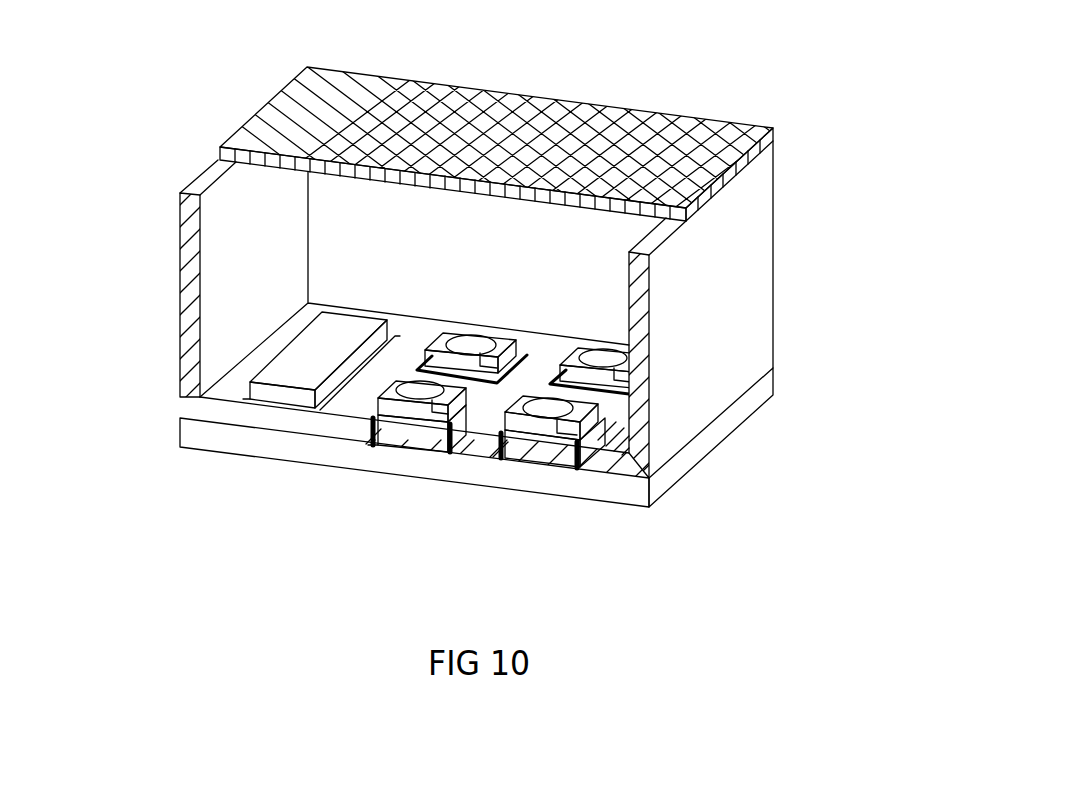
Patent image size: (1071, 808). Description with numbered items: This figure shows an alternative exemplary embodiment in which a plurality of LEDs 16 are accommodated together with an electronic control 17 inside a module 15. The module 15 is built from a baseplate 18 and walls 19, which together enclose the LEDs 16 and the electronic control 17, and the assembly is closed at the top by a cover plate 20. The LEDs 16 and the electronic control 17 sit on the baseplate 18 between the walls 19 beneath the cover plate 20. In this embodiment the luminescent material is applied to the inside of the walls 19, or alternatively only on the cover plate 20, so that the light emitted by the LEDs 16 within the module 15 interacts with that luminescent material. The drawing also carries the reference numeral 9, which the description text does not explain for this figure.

The side wall of housing 9 is at (242, 249).
The module 15 is at (506, 320).
The LEDs 16 is at (542, 450).
The electronic control 17 is at (283, 399).
The baseplate 18 is at (712, 433).
The walls 19 is at (618, 417).
The cover plate 20 is at (677, 112).